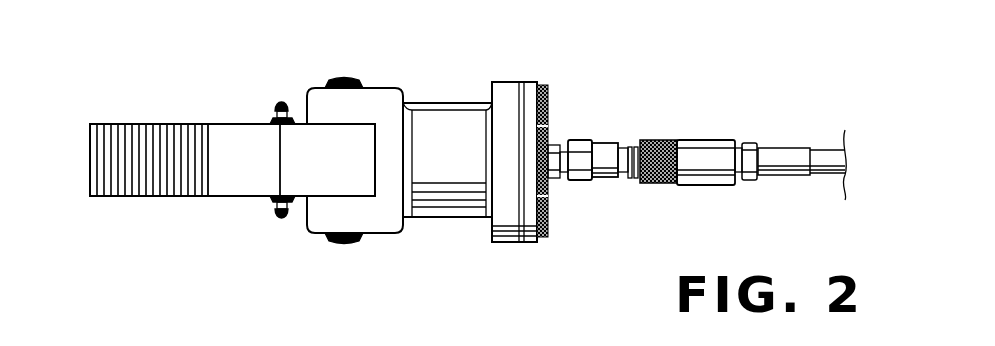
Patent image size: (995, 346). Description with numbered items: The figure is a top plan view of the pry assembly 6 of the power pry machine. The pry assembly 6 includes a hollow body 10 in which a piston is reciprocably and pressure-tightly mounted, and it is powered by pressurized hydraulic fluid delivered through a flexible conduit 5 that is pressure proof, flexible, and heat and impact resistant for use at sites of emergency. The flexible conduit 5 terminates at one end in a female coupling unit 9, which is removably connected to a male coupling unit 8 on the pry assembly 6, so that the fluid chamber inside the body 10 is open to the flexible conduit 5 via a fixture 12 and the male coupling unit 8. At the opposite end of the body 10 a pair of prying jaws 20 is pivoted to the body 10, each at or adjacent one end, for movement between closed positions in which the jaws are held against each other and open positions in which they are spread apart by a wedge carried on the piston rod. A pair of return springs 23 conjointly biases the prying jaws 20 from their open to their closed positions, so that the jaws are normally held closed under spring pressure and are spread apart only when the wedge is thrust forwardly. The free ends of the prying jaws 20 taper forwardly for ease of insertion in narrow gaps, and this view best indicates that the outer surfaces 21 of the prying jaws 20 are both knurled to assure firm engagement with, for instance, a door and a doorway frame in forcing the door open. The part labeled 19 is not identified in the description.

The flexible conduit 5 is at (788, 150).
The pry assembly 6 is at (411, 62).
The male coupling unit 8 is at (604, 143).
The female coupling unit 9 is at (670, 140).
The hollow body 10 is at (452, 105).
The fixture 12 is at (578, 172).
The knob 19 is at (346, 244).
The prying jaws 20 is at (333, 170).
The outer surfaces 21 is at (163, 170).
The return springs 23 is at (282, 100).